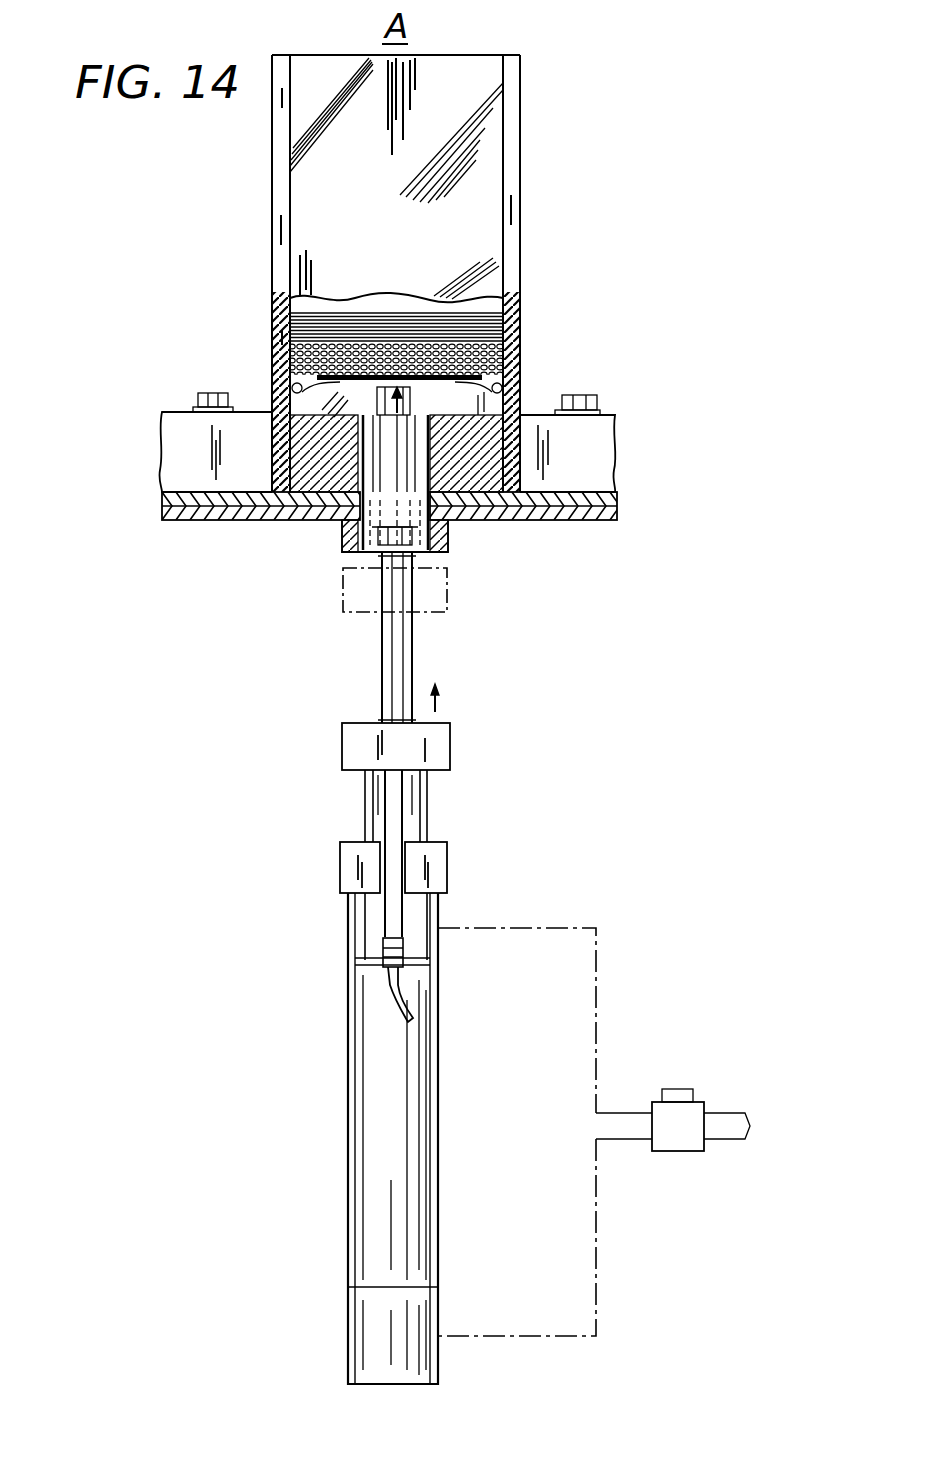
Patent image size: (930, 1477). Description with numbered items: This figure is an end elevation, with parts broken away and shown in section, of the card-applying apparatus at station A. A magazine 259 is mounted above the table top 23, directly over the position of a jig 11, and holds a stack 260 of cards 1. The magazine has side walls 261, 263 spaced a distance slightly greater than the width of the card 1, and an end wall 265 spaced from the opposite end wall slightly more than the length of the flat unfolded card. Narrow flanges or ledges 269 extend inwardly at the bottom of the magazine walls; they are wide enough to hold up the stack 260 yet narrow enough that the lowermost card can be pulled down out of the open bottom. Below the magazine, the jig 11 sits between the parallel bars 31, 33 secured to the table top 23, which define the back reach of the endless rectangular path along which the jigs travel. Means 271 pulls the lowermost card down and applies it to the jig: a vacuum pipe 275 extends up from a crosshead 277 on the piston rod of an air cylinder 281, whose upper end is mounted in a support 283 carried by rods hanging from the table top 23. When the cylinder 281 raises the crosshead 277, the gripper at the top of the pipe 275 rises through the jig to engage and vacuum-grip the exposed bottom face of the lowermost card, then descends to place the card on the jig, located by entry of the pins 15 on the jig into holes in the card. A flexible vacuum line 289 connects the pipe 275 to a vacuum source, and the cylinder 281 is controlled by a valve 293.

The card 1 is at (390, 295).
The jig 11 is at (468, 467).
The pin 15 is at (408, 408).
The table top 23 is at (597, 525).
The parallel bar 31 is at (178, 458).
The parallel bar 33 is at (603, 455).
The magazine 259 is at (532, 50).
The stack 260 is at (330, 318).
The side wall 261 is at (517, 318).
The side wall 263 is at (273, 322).
The end wall 265 is at (485, 135).
The flange or ledge 269 is at (272, 392).
The card-pulling means 271 is at (358, 693).
The vacuum pipe 275 is at (398, 668).
The crosshead 277 is at (447, 573).
The air cylinder 281 is at (435, 1062).
The support 283 is at (340, 870).
The flexible vacuum line 289 is at (393, 1000).
The valve 293 is at (662, 1143).